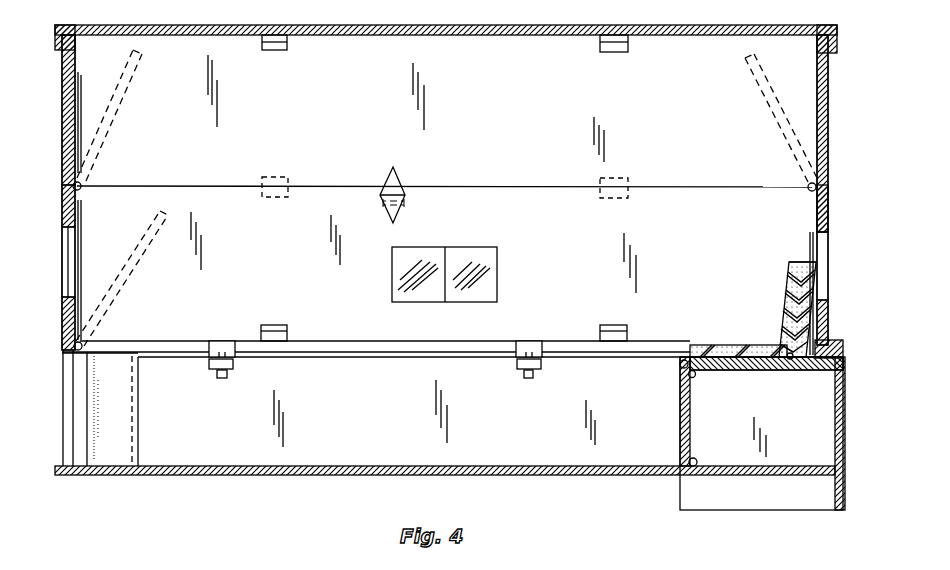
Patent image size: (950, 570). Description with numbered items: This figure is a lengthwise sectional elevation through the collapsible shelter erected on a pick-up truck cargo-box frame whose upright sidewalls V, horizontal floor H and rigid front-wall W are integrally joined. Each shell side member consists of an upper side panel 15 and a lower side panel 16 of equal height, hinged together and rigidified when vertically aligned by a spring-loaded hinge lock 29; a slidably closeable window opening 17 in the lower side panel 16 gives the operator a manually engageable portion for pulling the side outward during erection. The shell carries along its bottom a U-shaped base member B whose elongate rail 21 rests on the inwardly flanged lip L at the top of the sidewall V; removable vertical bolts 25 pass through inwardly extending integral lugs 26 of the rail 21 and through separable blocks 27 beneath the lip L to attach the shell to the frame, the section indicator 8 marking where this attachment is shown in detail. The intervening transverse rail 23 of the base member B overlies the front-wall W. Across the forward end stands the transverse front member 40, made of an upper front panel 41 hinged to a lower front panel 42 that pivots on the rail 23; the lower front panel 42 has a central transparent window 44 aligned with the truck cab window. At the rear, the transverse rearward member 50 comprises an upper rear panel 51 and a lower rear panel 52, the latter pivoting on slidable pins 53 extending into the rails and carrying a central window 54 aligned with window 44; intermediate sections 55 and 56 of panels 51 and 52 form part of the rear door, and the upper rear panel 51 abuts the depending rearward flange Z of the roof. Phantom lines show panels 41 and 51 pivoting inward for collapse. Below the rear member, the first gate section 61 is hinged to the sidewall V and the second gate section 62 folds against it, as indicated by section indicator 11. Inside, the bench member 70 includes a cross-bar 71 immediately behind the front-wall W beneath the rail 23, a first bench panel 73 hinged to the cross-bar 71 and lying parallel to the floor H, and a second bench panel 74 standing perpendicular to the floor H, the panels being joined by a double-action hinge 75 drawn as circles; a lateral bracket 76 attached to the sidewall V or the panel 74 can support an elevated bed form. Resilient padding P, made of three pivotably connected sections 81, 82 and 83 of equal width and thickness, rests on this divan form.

The section line 8- 8 is at (563, 332).
The section line 11- 11 is at (60, 367).
The upper side panel 15 is at (494, 109).
The lower side panel 16 is at (556, 227).
The window opening 17 is at (472, 247).
The elongate rail 21 is at (335, 341).
The intervening transverse rail 23 is at (843, 340).
The removable vertical bolt 25 is at (223, 378).
The integral lug 26 is at (222, 341).
The separable block 27 is at (235, 366).
The spring-loaded hinge lock 29 is at (398, 178).
The transverse front member 40 is at (829, 172).
The upper front panel 41 is at (817, 70).
The lower front panel 42 is at (828, 203).
The central transparent window 44 is at (828, 252).
The transverse rearward member 50 is at (62, 148).
The upper rear panel 51 is at (62, 68).
The lower rear panel 52 is at (62, 203).
The slidable pin 53 is at (88, 342).
The central window 54 is at (68, 253).
The intermediate section 55 is at (62, 113).
The intermediate section 56 is at (62, 222).
The first section 61 is at (78, 430).
The second section 62 is at (120, 432).
The bench member 70 is at (679, 392).
The cross-bar 71 is at (818, 372).
The first bench panel 73 is at (767, 372).
The second bench panel 74 is at (680, 430).
The double-action hinge 75 is at (680, 365).
The lateral bar or bracket 76 is at (697, 462).
The padding section 81 is at (703, 345).
The padding section 82 is at (786, 293).
The padding section 83 is at (805, 262).
The base member B is at (425, 341).
The floor H is at (403, 468).
The inwardly-flanged lip L is at (425, 357).
The padding P is at (785, 343).
The sidewall V is at (344, 407).
The front-wall W is at (835, 422).
The rearward flange Z is at (40, 5).